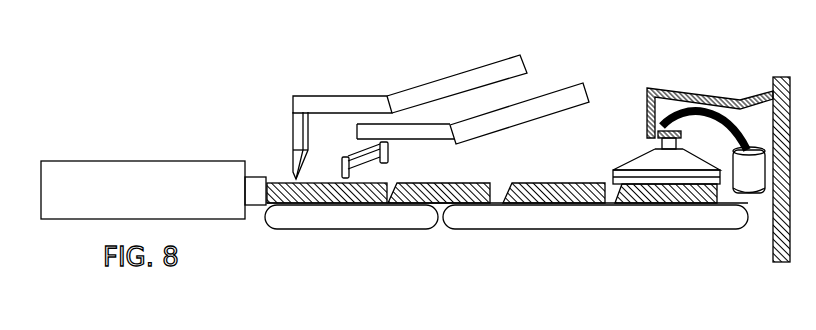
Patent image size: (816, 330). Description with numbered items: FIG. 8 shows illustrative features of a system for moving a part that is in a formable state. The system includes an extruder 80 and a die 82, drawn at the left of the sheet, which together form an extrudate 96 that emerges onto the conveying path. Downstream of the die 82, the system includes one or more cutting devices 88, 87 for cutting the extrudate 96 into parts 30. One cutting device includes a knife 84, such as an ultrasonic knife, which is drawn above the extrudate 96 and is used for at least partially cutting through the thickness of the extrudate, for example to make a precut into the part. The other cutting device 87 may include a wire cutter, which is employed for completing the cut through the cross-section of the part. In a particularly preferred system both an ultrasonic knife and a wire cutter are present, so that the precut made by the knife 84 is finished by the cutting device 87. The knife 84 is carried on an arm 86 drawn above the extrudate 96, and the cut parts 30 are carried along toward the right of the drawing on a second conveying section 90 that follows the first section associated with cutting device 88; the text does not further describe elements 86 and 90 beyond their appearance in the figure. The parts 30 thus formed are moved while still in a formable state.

The extruder 80 is at (128, 176).
The die 82 is at (252, 176).
The knife 84 is at (293, 150).
The blade holder arm 86 is at (350, 105).
The cutting device 87 is at (570, 93).
The cutting device 88 is at (407, 220).
The second conveyor 90 is at (533, 213).
The extrudate 96 is at (303, 190).
The part 30 is at (655, 195).